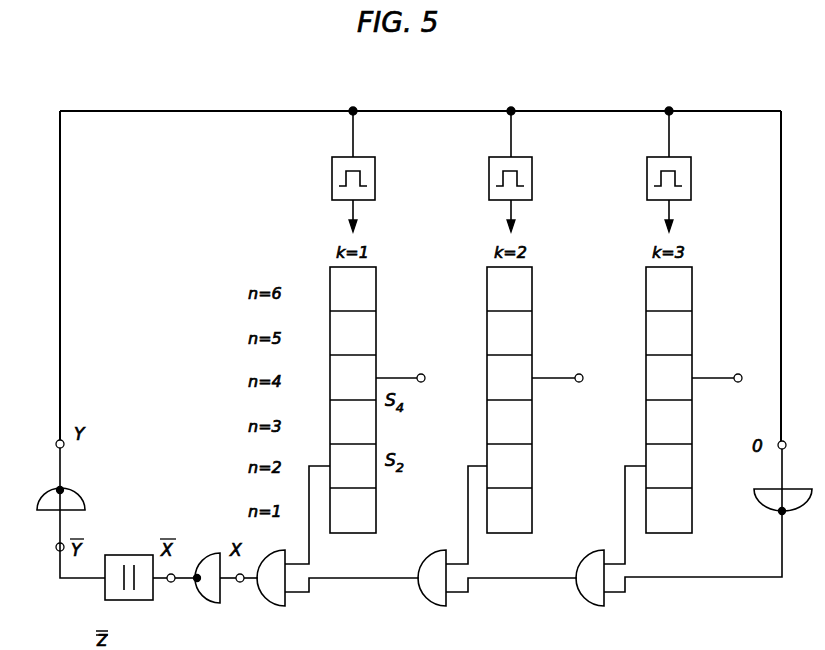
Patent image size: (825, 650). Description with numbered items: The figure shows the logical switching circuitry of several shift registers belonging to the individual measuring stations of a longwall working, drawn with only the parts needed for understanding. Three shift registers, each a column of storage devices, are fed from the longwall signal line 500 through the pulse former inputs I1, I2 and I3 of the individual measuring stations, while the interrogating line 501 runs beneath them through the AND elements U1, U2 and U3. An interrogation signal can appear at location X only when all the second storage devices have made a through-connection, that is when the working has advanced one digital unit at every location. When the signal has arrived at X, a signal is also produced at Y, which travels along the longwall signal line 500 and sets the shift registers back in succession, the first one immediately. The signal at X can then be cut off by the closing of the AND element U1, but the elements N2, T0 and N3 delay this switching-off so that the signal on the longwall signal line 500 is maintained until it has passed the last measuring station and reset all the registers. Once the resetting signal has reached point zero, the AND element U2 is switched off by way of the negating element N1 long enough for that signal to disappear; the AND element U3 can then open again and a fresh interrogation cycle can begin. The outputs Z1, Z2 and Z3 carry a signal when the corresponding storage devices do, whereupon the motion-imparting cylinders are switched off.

The longwall signal line 500 is at (567, 109).
The interrogating line 501 is at (664, 582).
The negating element N1 is at (759, 512).
The negating element N2 is at (207, 594).
The negating element N3 is at (72, 491).
The AND element U1 is at (271, 595).
The AND element U2 is at (431, 597).
The AND element U3 is at (590, 597).
The delay element T0 is at (129, 595).
The pulse former input I1 is at (336, 171).
The pulse former input I2 is at (492, 171).
The pulse former input I3 is at (651, 171).
The output Z1 is at (413, 382).
The output Z2 is at (570, 382).
The output Z3 is at (730, 382).